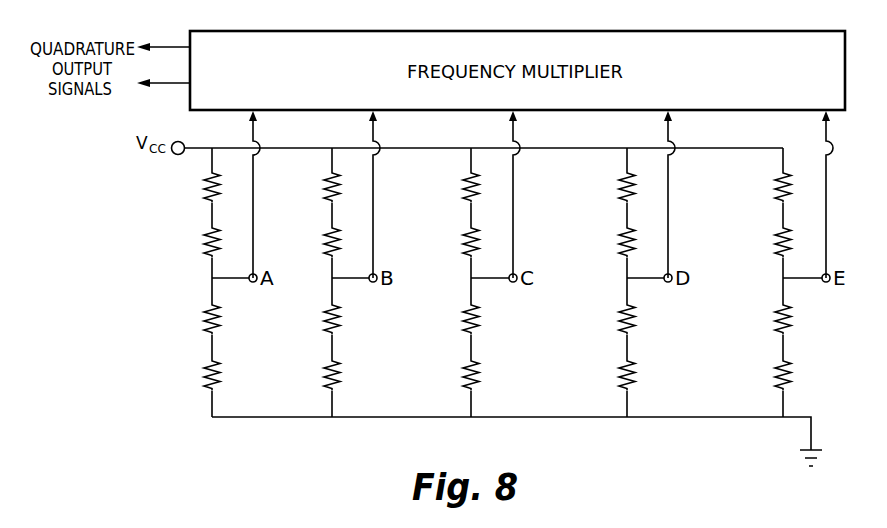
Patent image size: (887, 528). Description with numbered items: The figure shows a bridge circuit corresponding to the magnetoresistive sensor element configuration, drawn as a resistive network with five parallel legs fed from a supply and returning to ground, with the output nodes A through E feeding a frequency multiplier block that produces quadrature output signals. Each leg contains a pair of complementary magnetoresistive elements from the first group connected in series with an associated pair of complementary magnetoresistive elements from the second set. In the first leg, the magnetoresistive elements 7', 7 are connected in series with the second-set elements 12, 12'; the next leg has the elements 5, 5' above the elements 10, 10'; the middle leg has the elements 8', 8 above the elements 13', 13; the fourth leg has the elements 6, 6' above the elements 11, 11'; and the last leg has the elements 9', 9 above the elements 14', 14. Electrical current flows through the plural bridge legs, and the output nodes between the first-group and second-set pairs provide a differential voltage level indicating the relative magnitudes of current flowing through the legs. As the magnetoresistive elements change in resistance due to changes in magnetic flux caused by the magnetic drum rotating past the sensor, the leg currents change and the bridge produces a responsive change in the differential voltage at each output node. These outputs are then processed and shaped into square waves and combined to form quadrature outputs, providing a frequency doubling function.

The magnetoresistive element 5 is at (341, 187).
The complementary magnetoresistive element 5' is at (344, 242).
The magnetoresistive element 6 is at (636, 187).
The complementary magnetoresistive element 6' is at (639, 242).
The magnetoresistive element 7 is at (221, 242).
The complementary magnetoresistive element 7' is at (224, 187).
The magnetoresistive element 8 is at (480, 242).
The complementary magnetoresistive element 8' is at (483, 187).
The magnetoresistive element 9 is at (792, 242).
The complementary magnetoresistive element 9' is at (795, 187).
The magnetoresistive element 10 is at (347, 319).
The complementary magnetoresistive element 10' is at (350, 375).
The magnetoresistive element 11 is at (642, 319).
The complementary magnetoresistive element 11' is at (645, 375).
The magnetoresistive element 12 is at (227, 319).
The complementary magnetoresistive element 12' is at (230, 375).
The magnetoresistive element 13 is at (486, 375).
The complementary magnetoresistive element 13' is at (489, 319).
The magnetoresistive element 14 is at (798, 375).
The complementary magnetoresistive element 14' is at (801, 319).